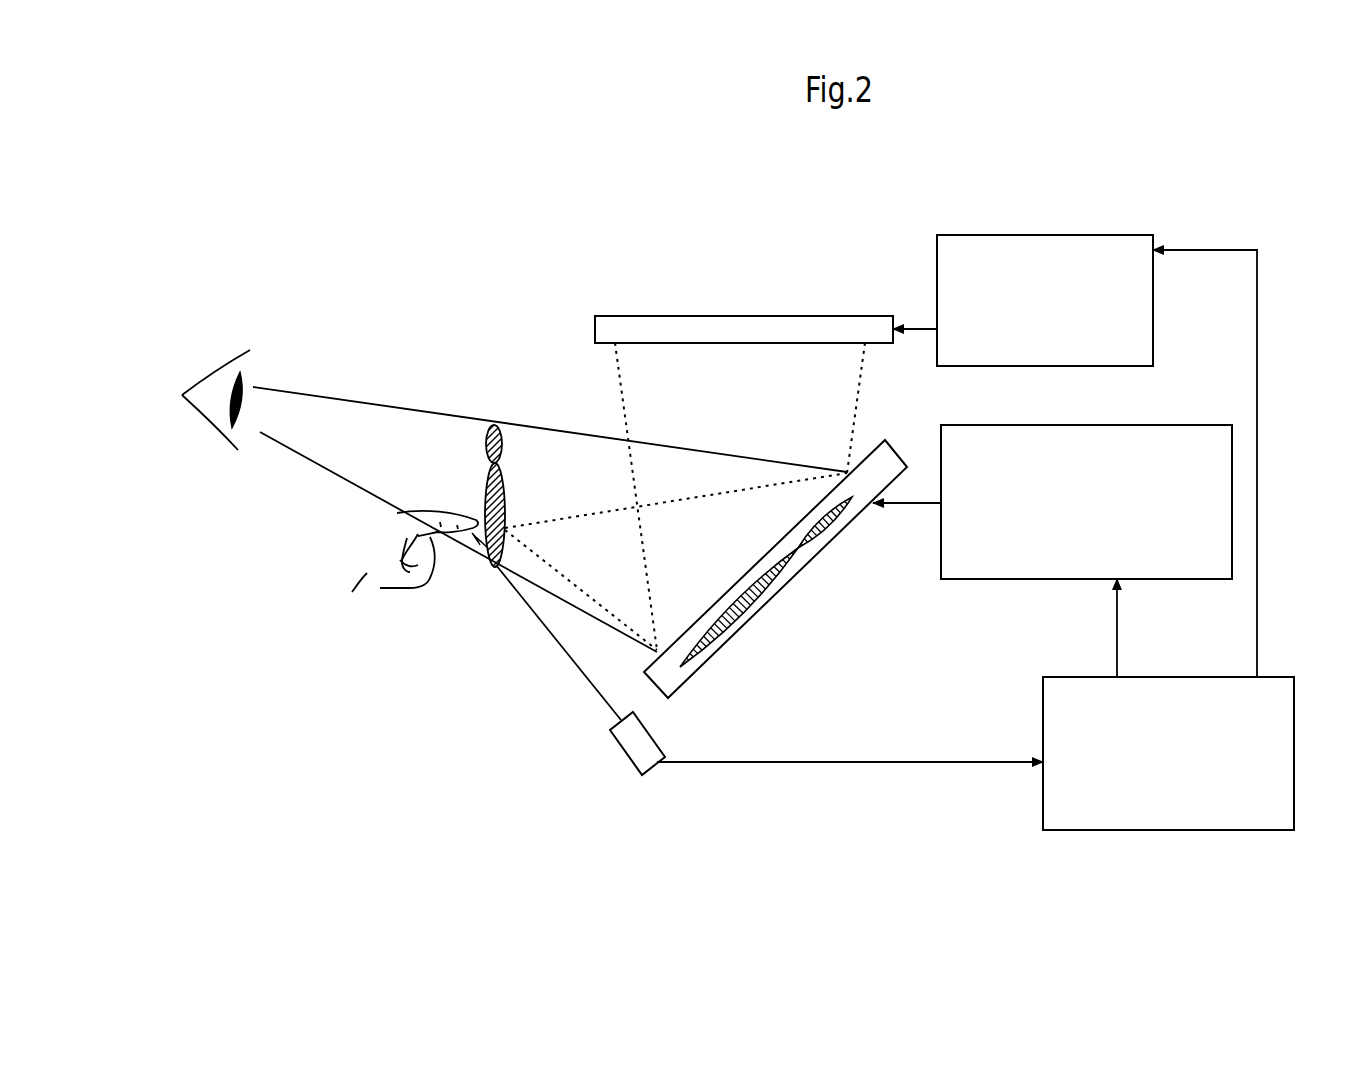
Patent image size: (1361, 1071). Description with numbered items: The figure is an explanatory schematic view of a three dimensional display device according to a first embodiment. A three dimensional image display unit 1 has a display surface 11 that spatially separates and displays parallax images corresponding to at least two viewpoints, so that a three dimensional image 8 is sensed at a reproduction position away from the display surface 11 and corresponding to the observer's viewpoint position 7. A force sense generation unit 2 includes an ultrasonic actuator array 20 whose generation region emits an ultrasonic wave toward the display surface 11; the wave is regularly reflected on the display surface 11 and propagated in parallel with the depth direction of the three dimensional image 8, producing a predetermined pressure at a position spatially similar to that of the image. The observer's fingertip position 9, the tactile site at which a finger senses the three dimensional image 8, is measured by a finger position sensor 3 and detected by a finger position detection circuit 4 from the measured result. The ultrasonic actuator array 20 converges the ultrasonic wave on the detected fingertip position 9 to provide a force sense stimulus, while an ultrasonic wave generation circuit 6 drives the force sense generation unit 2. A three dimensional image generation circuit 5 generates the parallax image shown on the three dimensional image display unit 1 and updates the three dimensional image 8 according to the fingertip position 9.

The three dimensional image display unit 1 is at (800, 562).
The force sense generation unit 2 is at (723, 333).
The finger position sensor 3 is at (632, 750).
The finger position detection circuit 4 is at (1280, 722).
The three dimensional image generation circuit 5 is at (1145, 438).
The ultrasonic wave generation circuit 6 is at (1082, 242).
The observer's viewpoint position 7 is at (240, 372).
The three dimensional image 8 is at (493, 425).
The fingertip position 9 is at (464, 533).
The display surface 11 is at (702, 612).
The ultrasonic actuator array 20 is at (806, 330).